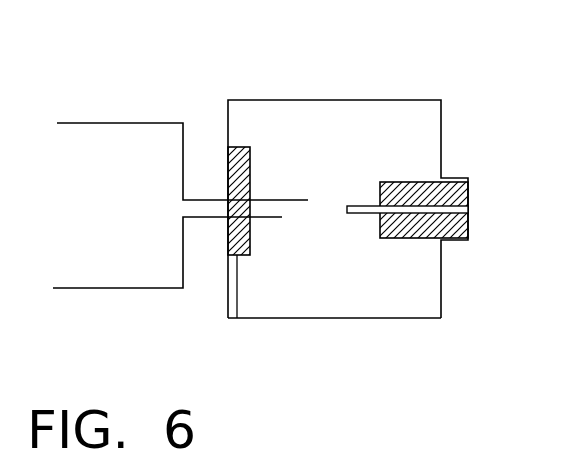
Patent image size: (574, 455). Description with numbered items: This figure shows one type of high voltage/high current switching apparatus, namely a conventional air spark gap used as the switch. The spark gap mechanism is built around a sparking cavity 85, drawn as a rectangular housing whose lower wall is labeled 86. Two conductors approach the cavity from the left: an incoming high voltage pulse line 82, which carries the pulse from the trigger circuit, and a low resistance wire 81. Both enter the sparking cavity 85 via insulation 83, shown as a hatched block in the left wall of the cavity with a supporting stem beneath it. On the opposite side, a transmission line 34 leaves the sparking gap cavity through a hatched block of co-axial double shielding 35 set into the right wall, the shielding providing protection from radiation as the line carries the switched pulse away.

The low resistance wire 81 is at (120, 123).
The incoming high voltage pulse line 82 is at (80, 288).
The insulation 83 is at (233, 318).
The sparking cavity 85 is at (318, 207).
The housing base 86 is at (417, 318).
The co-axial double shielding 35 is at (415, 183).
The transmission line 34 is at (470, 210).